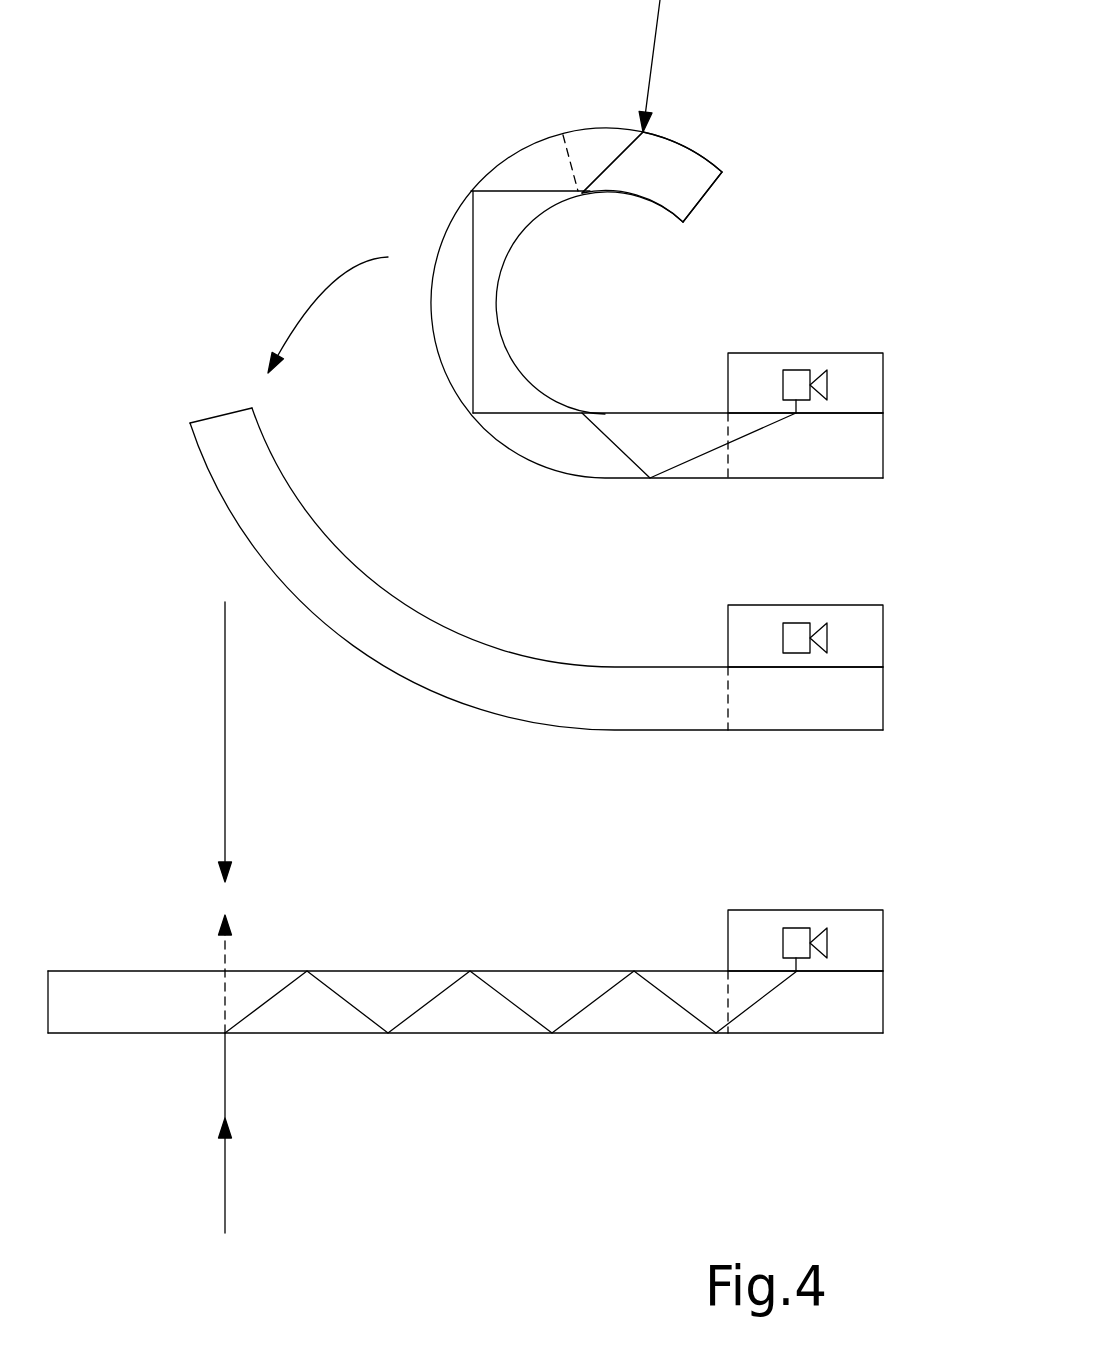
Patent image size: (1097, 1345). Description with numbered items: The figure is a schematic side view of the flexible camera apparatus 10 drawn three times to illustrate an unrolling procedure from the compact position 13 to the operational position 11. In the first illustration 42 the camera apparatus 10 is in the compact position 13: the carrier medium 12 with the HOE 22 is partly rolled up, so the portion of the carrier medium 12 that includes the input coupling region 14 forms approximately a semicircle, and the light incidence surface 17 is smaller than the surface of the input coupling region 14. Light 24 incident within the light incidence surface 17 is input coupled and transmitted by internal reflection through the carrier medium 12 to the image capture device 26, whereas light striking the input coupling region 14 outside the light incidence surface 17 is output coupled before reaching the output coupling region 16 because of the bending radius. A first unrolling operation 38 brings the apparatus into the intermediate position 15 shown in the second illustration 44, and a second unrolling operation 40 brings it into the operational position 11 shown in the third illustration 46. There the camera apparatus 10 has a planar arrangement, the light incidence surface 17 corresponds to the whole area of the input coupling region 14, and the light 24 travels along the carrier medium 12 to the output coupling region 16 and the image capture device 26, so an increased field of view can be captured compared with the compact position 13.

The flexible camera apparatus 10 is at (503, 617).
The operational position 11 is at (128, 947).
The carrier medium 12 is at (525, 380).
The compact position 13 is at (467, 142).
The input coupling region 14 is at (465, 596).
The intermediate position 15 is at (186, 395).
The output coupling region 16 is at (883, 445).
The light incidence surface 17 is at (685, 143).
The HOE 22 is at (465, 637).
The light 24 is at (660, 33).
The image capture device 26 is at (883, 385).
The first unrolling operation 38 is at (330, 287).
The second unrolling operation 40 is at (225, 772).
The first illustration 42 is at (552, 62).
The second illustration 44 is at (203, 287).
The third illustration 46 is at (352, 928).